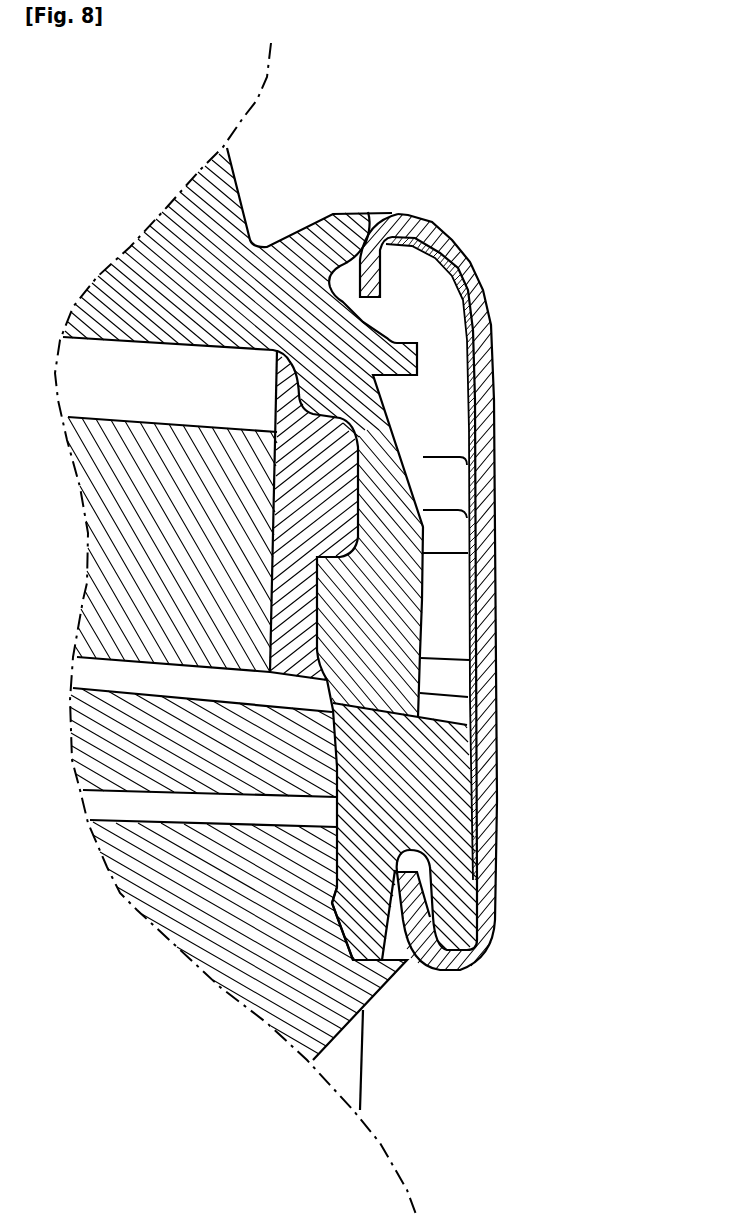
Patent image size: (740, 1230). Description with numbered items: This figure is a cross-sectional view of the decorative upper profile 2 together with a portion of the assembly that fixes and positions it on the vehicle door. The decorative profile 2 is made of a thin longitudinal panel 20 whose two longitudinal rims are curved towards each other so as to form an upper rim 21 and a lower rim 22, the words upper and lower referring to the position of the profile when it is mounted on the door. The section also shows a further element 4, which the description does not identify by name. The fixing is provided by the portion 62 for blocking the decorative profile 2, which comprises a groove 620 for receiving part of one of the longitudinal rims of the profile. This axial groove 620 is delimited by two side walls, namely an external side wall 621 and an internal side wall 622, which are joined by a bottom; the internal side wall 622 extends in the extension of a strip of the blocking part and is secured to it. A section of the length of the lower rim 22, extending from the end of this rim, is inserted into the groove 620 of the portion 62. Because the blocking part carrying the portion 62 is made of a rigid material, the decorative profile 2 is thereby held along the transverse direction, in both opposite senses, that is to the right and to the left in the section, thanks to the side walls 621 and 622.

The decorative profile 2 is at (531, 514).
The body panel 4 is at (300, 322).
The longitudinal panel 20 is at (483, 410).
The upper rim 21 is at (370, 269).
The lower rim 22 is at (410, 902).
The portion for blocking the decorative profile 62 is at (327, 767).
The groove 620 is at (418, 860).
The external side wall 621 is at (447, 900).
The internal side wall 622 is at (363, 890).